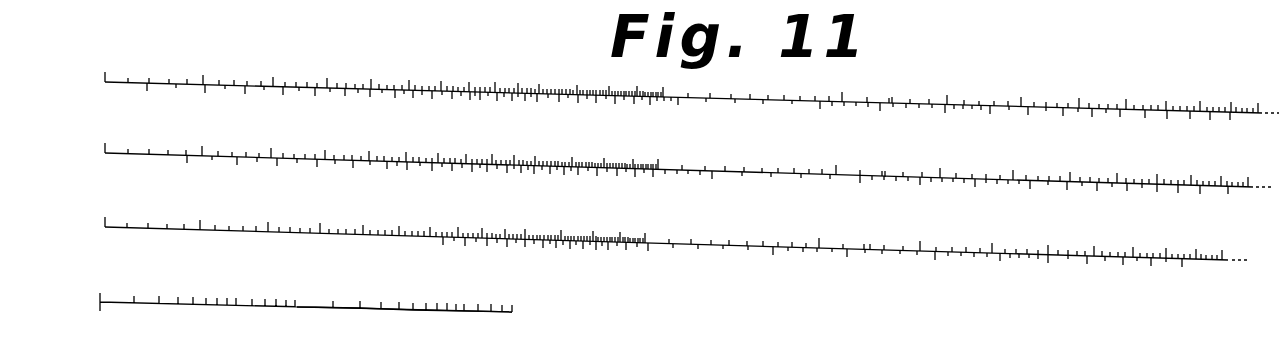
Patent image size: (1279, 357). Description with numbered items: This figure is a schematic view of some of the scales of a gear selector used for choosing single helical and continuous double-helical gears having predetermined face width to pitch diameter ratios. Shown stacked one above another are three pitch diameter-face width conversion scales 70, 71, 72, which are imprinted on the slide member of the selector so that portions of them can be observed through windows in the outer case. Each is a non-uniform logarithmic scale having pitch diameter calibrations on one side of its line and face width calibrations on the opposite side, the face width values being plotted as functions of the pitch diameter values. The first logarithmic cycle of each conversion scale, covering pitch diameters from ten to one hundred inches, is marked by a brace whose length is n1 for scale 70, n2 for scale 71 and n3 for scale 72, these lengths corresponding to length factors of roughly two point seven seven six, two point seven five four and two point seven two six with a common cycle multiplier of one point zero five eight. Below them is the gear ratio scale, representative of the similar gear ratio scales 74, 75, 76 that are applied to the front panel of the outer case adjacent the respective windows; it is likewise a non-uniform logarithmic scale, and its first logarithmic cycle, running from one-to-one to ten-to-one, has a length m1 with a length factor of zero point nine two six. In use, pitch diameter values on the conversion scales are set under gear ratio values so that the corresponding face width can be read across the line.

The length of first log cycle of scale 70 n1 is at (660, 69).
The length of first log cycle of scale 71 n2 is at (658, 148).
The length of first log cycle of scale 72 n3 is at (645, 216).
The pitch diameter-face width conversion scale 70 is at (892, 103).
The pitch diameter-face width conversion scale 71 is at (885, 177).
The pitch diameter-face width conversion scale 72 is at (870, 250).
The length of first log cycle of gear ratio scales m1 is at (297, 315).
The gear ratio scale 74 is at (323, 309).
The gear ratio scale 75 is at (378, 312).
The gear ratio scale 76 is at (437, 313).